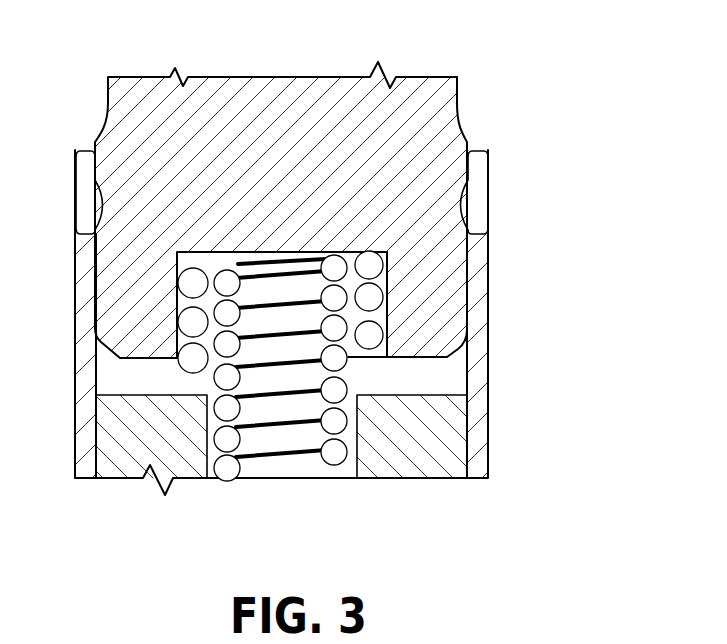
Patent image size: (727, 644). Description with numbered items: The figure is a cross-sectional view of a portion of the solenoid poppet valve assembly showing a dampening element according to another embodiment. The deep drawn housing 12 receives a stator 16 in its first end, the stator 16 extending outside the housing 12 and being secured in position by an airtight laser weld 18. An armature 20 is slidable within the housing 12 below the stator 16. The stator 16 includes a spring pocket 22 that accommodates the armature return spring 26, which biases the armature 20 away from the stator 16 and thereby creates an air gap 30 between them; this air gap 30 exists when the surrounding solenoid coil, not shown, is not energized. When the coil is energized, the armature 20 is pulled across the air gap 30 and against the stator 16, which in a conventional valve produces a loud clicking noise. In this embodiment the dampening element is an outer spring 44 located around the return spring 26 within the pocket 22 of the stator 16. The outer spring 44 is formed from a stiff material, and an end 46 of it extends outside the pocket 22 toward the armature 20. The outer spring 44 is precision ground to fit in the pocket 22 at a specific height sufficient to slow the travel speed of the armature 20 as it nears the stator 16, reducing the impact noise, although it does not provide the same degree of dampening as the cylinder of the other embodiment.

The housing 12 is at (490, 272).
The stator 16 is at (447, 113).
The laser weld 18 is at (478, 200).
The armature 20 is at (433, 462).
The spring pocket 22 is at (205, 262).
The return spring 26 is at (332, 452).
The air gap 30 is at (447, 375).
The outer spring 44 is at (193, 275).
The end 46 is at (193, 366).